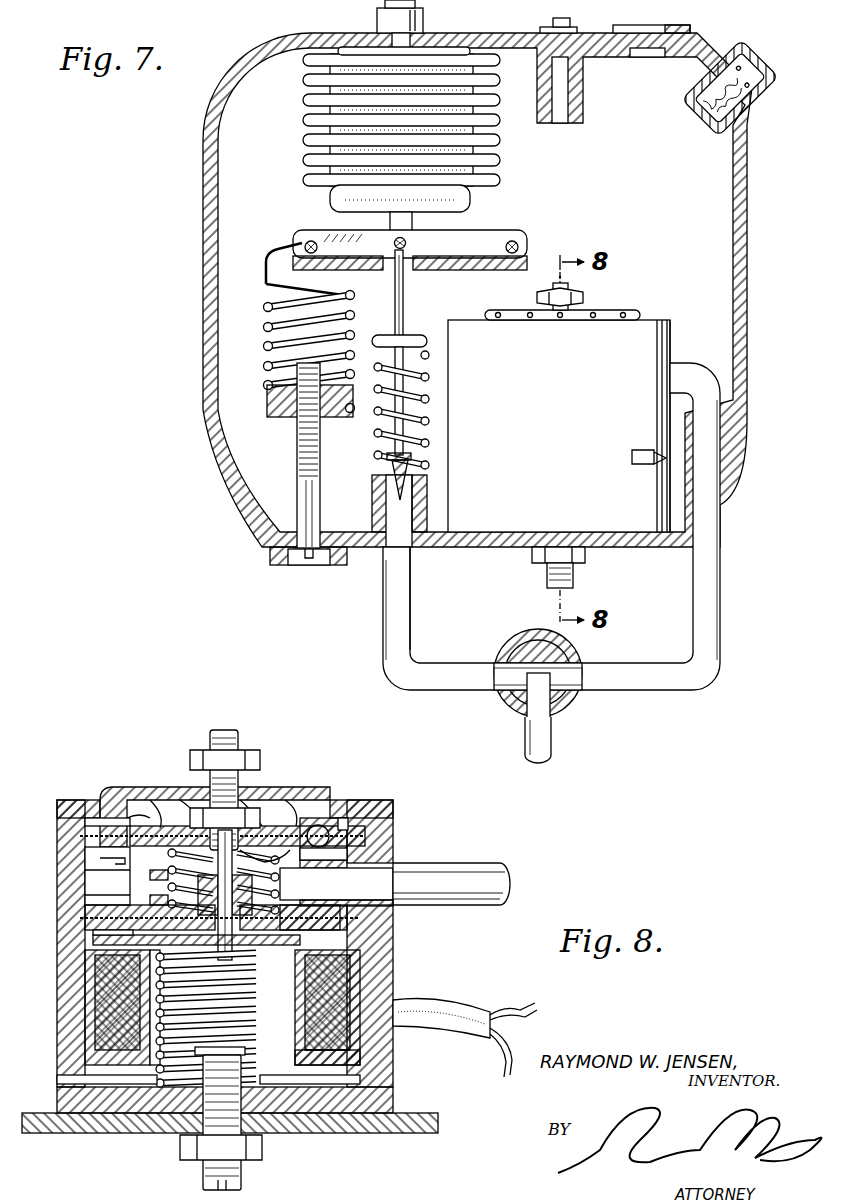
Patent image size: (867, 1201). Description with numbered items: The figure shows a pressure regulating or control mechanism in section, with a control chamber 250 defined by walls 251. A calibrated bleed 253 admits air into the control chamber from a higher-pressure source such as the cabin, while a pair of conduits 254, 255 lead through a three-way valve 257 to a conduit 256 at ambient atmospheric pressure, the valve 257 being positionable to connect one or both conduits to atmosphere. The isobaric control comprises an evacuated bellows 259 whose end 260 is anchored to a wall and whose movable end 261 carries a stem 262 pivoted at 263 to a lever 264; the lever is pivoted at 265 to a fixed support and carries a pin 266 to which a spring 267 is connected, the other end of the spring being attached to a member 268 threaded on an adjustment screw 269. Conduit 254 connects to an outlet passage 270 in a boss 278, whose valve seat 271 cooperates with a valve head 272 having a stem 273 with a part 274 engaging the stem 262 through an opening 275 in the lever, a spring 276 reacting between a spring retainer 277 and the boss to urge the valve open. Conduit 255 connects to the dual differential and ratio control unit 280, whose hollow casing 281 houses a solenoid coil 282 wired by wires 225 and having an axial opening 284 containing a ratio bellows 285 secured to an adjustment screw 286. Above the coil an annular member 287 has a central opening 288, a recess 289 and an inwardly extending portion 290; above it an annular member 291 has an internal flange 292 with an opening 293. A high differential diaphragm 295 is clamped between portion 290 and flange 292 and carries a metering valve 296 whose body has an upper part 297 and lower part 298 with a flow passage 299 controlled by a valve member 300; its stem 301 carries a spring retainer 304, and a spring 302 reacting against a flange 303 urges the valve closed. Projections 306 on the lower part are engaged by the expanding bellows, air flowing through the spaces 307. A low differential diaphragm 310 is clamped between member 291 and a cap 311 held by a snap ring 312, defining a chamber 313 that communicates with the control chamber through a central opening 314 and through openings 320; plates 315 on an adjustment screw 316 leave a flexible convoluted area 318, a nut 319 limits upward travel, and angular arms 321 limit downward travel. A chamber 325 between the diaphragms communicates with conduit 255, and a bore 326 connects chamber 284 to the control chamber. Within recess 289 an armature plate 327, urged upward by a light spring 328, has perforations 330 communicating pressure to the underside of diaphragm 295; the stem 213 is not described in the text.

In FIG. 8, the valve stem 213 is at (262, 882).
In FIG. 8, the wires 225 is at (512, 1032).
In FIG. 7, the control chamber 250 is at (654, 180).
In FIG. 7, the walls 251 is at (746, 222).
In FIG. 8, the walls 251 is at (415, 1135).
In FIG. 7, the calibrated bleed 253 is at (776, 79).
In FIG. 7, the conduit 254 is at (400, 600).
In FIG. 7, the conduit 255 is at (700, 580).
In FIG. 8, the conduit 255 is at (478, 872).
In FIG. 7, the conduit 256 is at (540, 752).
In FIG. 7, the three-way valve 257 is at (580, 705).
In FIG. 7, the evacuated bellows 259 is at (493, 138).
In FIG. 7, the anchored end of bellows 260 is at (432, 48).
In FIG. 7, the movable end of bellows 261 is at (452, 196).
In FIG. 7, the stem 262 is at (392, 222).
In FIG. 7, the pivot 263 is at (406, 246).
In FIG. 7, the lever 264 is at (515, 240).
In FIG. 7, the pivot 265 is at (522, 247).
In FIG. 7, the pin 266 is at (308, 246).
In FIG. 7, the spring 267 is at (266, 327).
In FIG. 7, the member 268 is at (266, 402).
In FIG. 7, the adjustment screw 269 is at (298, 454).
In FIG. 7, the outlet passage 270 is at (396, 516).
In FIG. 7, the valve seat 271 is at (388, 470).
In FIG. 7, the valve head 272 is at (412, 462).
In FIG. 7, the valve stem 273 is at (404, 410).
In FIG. 7, the part 274 is at (404, 292).
In FIG. 7, the opening 275 is at (397, 280).
In FIG. 7, the spring 276 is at (428, 378).
In FIG. 7, the spring retainer 277 is at (416, 336).
In FIG. 7, the boss 278 is at (426, 495).
In FIG. 7, the dual differential and ratio control unit 280 is at (653, 308).
In FIG. 8, the dual differential and ratio control unit 280 is at (400, 825).
In FIG. 7, the casing 281 is at (668, 338).
In FIG. 8, the casing 281 is at (380, 972).
In FIG. 8, the solenoid coil 282 is at (340, 1045).
In FIG. 8, the axial opening 284 is at (340, 1068).
In FIG. 8, the ratio bellows 285 is at (158, 1025).
In FIG. 8, the adjustment screw 286 is at (242, 1170).
In FIG. 8, the annular member 287 is at (370, 940).
In FIG. 8, the central opening 288 is at (100, 918).
In FIG. 8, the recess 289 is at (345, 945).
In FIG. 8, the inwardly extending portion 290 is at (375, 920).
In FIG. 8, the annular member 291 is at (100, 878).
In FIG. 8, the internal flange 292 is at (100, 900).
In FIG. 8, the opening 293 is at (180, 898).
In FIG. 8, the high differential diaphragm 295 is at (282, 905).
In FIG. 8, the metering valve 296 is at (192, 890).
In FIG. 8, the upper part of valve body 297 is at (240, 895).
In FIG. 8, the lower part of valve body 298 is at (272, 970).
In FIG. 8, the flow passage 299 is at (160, 958).
In FIG. 8, the valve member 300 is at (160, 975).
In FIG. 8, the stem 301 is at (262, 850).
In FIG. 8, the spring 302 is at (350, 820).
In FIG. 8, the flange 303 is at (178, 885).
In FIG. 8, the spring retainer 304 is at (300, 830).
In FIG. 8, the projections 306 is at (275, 1000).
In FIG. 8, the spaces 307 is at (272, 1012).
In FIG. 8, the low differential diaphragm 310 is at (372, 840).
In FIG. 7, the cap 311 is at (606, 312).
In FIG. 8, the cap 311 is at (285, 790).
In FIG. 8, the snap ring 312 is at (128, 812).
In FIG. 8, the chamber 313 is at (104, 798).
In FIG. 8, the central opening 314 is at (250, 790).
In FIG. 8, the plates 315 is at (160, 826).
In FIG. 8, the adjustment screw 316 is at (222, 732).
In FIG. 8, the flexible convoluted area 318 is at (130, 838).
In FIG. 8, the nut 319 is at (202, 812).
In FIG. 7, the openings 320 is at (530, 313).
In FIG. 8, the openings 320 is at (118, 800).
In FIG. 8, the angular arms 321 is at (128, 855).
In FIG. 8, the chamber 325 is at (340, 893).
In FIG. 8, the bore 326 is at (62, 1079).
In FIG. 8, the plate 327 is at (95, 948).
In FIG. 8, the light spring 328 is at (158, 1010).
In FIG. 8, the perforations 330 is at (345, 990).